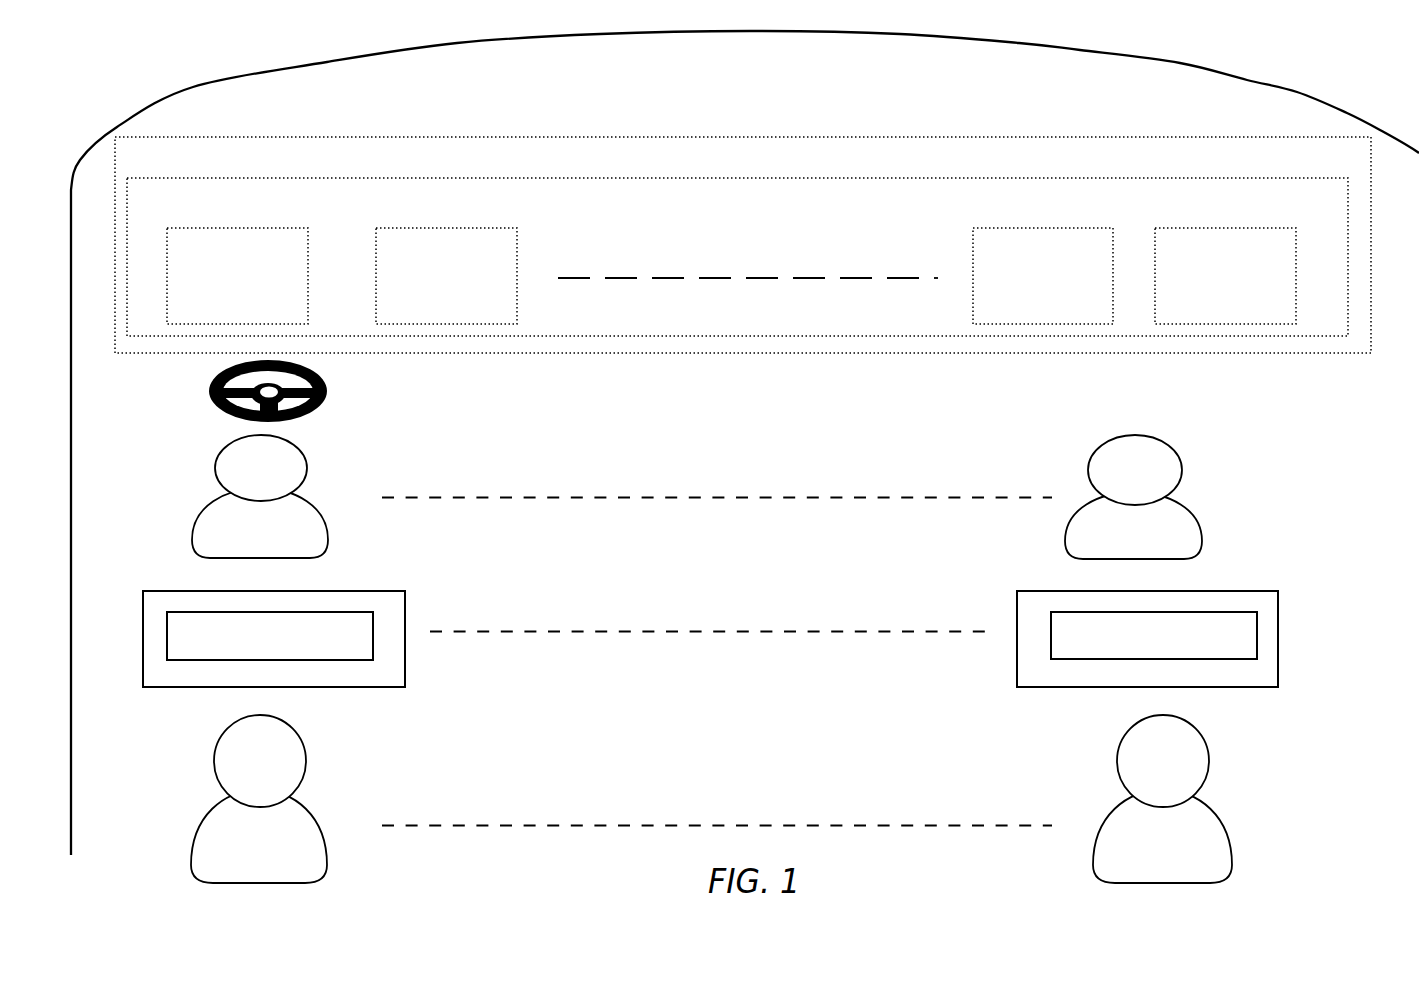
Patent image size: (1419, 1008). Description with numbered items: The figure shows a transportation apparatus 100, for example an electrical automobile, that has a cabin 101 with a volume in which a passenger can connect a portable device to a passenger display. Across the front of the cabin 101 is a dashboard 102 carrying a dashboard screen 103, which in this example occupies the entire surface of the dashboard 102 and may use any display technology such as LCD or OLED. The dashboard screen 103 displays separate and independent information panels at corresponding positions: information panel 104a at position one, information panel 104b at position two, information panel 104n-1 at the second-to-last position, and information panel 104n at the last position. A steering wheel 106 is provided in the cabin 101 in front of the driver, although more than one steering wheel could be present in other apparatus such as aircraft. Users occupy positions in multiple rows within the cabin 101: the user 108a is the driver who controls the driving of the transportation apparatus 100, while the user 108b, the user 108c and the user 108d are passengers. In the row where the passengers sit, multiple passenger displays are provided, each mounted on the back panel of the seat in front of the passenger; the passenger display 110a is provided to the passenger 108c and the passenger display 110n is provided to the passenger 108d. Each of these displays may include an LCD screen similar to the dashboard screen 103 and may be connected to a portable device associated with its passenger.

The transportation apparatus 100 is at (1292, 95).
The cabin 101 is at (758, 78).
The dashboard 102 is at (838, 137).
The dashboard screen 103 is at (818, 178).
The information panel 104a is at (228, 228).
The information panel 104b is at (438, 228).
The information panel 104n-1 is at (1055, 208).
The information panel 104n is at (1225, 228).
The steering wheel 106 is at (327, 393).
The user 108a is at (304, 458).
The user 108b is at (1162, 448).
The user 108c is at (301, 741).
The user 108d is at (1205, 741).
The passenger display 110a is at (397, 591).
The passenger display 110n is at (1272, 591).